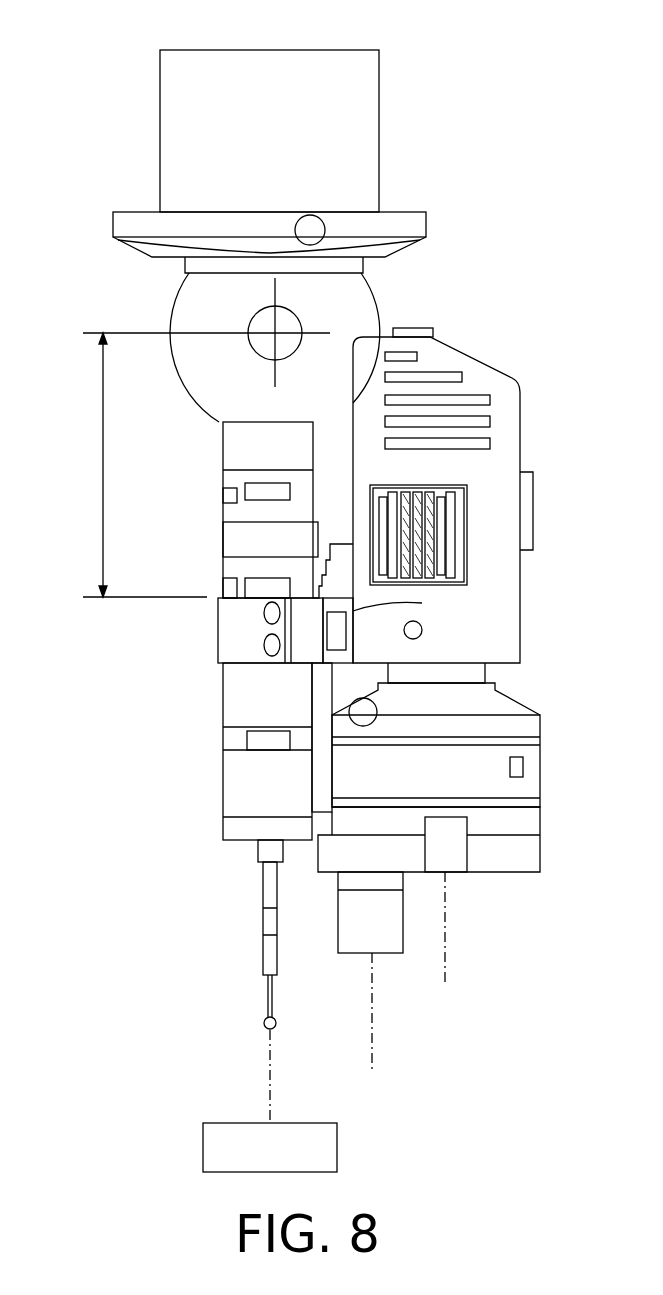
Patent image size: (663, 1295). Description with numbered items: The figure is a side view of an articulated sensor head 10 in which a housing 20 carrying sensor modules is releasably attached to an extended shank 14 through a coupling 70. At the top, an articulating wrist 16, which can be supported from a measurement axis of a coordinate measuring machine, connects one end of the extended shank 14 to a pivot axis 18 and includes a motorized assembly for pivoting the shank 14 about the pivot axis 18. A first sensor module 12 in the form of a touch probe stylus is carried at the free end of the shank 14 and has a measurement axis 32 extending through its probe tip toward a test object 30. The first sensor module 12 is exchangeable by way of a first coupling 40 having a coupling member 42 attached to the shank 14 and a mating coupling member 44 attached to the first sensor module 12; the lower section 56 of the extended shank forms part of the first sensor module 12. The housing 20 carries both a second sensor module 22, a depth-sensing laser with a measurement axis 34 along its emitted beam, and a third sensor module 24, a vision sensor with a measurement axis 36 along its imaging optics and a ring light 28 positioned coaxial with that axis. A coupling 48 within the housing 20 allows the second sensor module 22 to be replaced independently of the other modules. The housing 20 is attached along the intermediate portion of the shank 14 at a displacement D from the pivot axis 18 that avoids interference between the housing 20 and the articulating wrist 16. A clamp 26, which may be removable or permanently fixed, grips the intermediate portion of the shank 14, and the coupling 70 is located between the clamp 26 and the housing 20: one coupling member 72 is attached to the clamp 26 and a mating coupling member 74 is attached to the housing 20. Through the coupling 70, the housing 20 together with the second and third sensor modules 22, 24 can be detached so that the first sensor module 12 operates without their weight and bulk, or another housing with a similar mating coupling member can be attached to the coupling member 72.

The articulated sensor head 10 is at (80, 58).
The first sensor module 12 is at (262, 947).
The extended shank 14 is at (232, 541).
The articulating wrist 16 is at (176, 296).
The pivot axis 18 is at (292, 312).
The housing 20 is at (521, 428).
The second sensor module 22 is at (355, 953).
The third sensor module 24 is at (542, 787).
The clamp 26 is at (240, 628).
The ring light 28 is at (542, 857).
The test object 30 is at (203, 1145).
The measurement axis 32 is at (272, 1073).
The measurement axis 34 is at (374, 1032).
The measurement axis 36 is at (447, 953).
The first coupling 40 is at (206, 736).
The coupling member 42 is at (262, 725).
The mating coupling member 44 is at (257, 752).
The coupling 48 is at (330, 878).
The lower section 56 is at (227, 803).
The coupling 70 is at (364, 637).
The coupling member 72 is at (323, 654).
The mating coupling member 74 is at (410, 608).
The displacement D is at (103, 466).